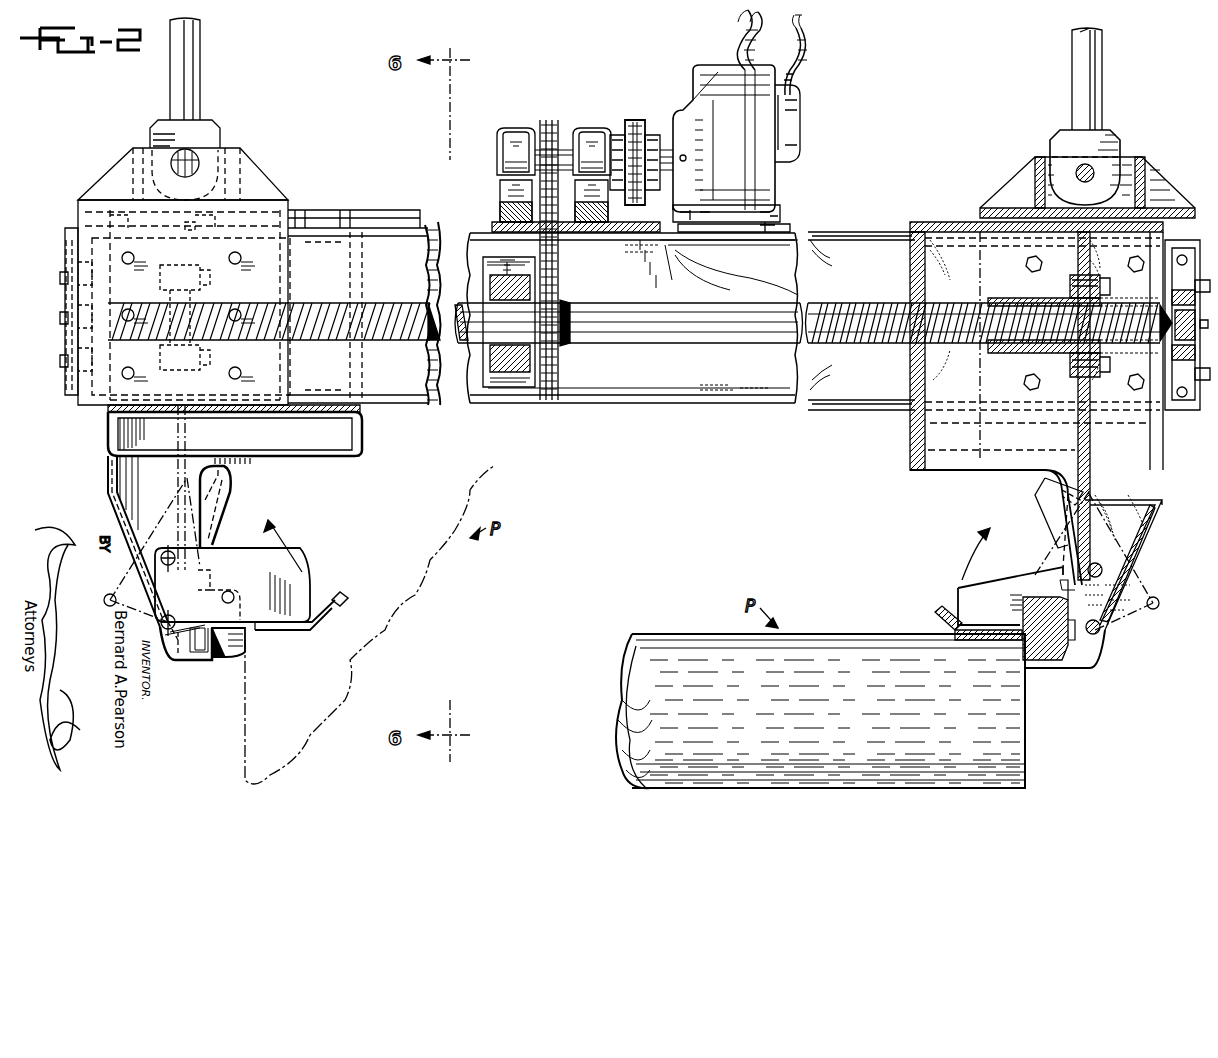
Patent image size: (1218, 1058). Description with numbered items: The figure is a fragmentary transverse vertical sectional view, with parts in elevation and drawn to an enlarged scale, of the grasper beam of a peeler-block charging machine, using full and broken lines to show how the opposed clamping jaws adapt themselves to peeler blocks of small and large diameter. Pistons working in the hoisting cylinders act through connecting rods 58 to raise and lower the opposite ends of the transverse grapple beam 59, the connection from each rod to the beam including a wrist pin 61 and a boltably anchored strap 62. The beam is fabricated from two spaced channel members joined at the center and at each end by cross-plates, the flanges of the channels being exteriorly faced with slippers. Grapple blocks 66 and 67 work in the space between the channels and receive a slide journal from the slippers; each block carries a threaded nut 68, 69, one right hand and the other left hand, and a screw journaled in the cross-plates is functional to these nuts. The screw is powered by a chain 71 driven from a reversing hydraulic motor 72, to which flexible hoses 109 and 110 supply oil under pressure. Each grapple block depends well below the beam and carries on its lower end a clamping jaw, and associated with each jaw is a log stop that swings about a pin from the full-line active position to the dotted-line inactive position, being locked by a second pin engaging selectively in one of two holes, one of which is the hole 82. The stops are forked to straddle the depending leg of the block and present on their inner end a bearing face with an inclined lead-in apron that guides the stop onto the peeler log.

The connecting rod 58 is at (195, 58).
The transverse grapple beam 59 is at (645, 410).
The wrist pin 61 is at (200, 160).
The strap 62 is at (128, 165).
The grapple block 66 is at (108, 468).
The grapple block 67 is at (1005, 472).
The threaded nut 68 is at (250, 292).
The threaded nut 69 is at (1032, 300).
The chain 71 is at (560, 368).
The reversing hydraulic motor 72 is at (710, 72).
The hole 82 is at (228, 591).
The flexible hose 109 is at (745, 22).
The flexible hose 110 is at (808, 38).